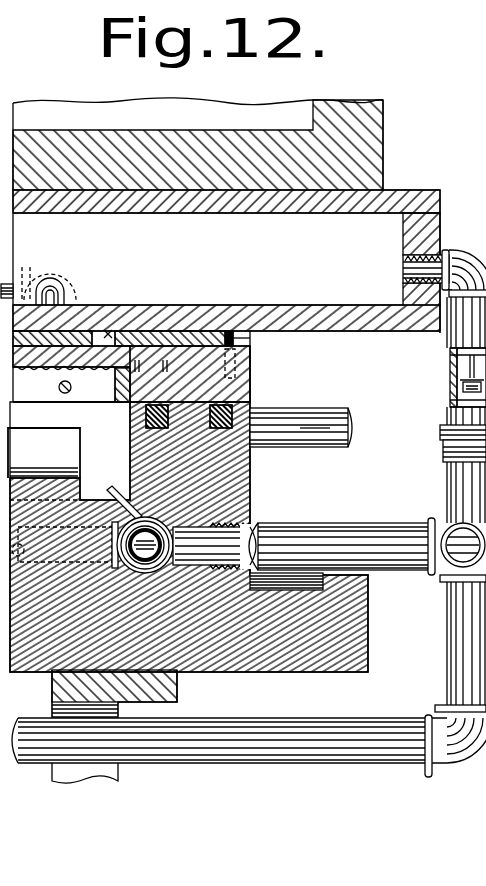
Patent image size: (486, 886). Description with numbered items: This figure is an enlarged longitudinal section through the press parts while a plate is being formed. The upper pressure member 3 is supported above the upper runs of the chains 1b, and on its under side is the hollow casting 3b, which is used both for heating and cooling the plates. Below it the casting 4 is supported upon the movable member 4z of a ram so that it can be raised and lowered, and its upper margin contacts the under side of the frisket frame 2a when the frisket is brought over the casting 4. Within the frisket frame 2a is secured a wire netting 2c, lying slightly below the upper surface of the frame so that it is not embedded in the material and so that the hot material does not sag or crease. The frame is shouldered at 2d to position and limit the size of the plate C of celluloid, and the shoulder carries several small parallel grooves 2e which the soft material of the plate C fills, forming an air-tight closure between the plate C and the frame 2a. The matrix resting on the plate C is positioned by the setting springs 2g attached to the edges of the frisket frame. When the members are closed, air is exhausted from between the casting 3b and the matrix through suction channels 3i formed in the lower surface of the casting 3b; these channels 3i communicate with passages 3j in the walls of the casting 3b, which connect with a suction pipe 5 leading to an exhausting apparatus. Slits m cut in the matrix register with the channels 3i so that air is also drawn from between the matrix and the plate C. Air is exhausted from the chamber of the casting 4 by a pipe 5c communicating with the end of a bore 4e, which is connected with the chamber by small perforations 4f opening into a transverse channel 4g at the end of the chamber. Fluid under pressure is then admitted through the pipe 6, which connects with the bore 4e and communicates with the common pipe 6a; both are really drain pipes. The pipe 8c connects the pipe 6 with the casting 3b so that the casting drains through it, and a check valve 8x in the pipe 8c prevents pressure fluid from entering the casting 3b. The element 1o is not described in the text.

The upper pressure member 3 is at (170, 139).
The hollow casting 3b is at (349, 270).
The suction channels 3i is at (112, 334).
The passages 3j is at (62, 282).
The plate C is at (60, 357).
The slits m is at (124, 328).
The frisket frame 2a is at (251, 374).
The wire netting 2c is at (88, 371).
The shoulder 2d is at (220, 373).
The grooves 2e is at (165, 370).
The setting springs 2g is at (241, 338).
The chains 1b is at (294, 410).
The rod end 1o is at (312, 430).
The casting 4 is at (232, 643).
The bore 4e is at (212, 430).
The small perforations 4f is at (116, 490).
The transverse channel 4g is at (86, 459).
The movable ram member 4z is at (62, 690).
The suction pipe 5 is at (217, 546).
The pipe 5c is at (57, 552).
The pipe 6 is at (363, 535).
The common pipe 6a is at (300, 730).
The pipe 8c is at (447, 297).
The check valve 8x is at (452, 378).